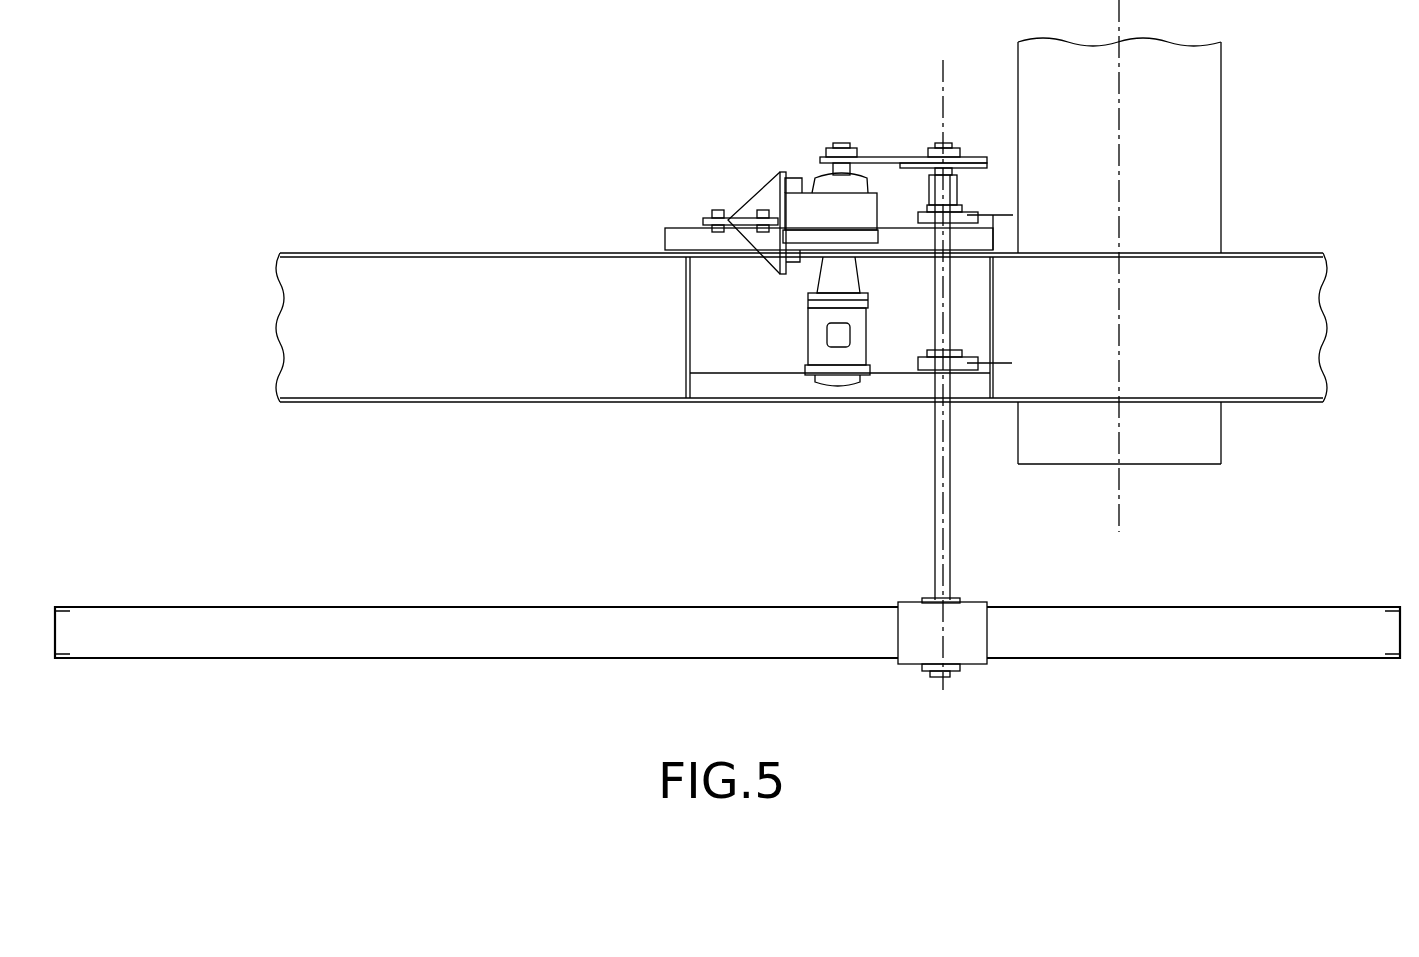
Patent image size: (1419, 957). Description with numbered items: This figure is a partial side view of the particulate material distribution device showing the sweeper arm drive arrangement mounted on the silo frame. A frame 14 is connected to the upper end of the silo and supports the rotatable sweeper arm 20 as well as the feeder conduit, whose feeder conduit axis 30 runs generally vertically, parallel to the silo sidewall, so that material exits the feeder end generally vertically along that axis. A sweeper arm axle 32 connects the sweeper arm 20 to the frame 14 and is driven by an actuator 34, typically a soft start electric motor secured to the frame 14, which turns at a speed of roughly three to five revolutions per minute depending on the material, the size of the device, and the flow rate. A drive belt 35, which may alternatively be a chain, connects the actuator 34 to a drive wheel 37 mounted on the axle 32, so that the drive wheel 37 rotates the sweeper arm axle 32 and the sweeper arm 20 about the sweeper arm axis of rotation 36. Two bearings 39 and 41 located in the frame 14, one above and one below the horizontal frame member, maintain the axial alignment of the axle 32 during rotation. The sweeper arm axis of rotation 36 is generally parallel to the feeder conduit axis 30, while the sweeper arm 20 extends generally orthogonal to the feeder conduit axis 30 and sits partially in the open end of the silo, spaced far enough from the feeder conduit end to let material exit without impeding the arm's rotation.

The frame 14 is at (415, 267).
The sweeper arm 20 is at (680, 610).
The feeder conduit axis 30 is at (1119, 512).
The sweeper arm axle 32 is at (950, 517).
The actuator 34 is at (826, 152).
The drive belt 35 is at (886, 157).
The sweeper arm axis of rotation 36 is at (943, 622).
The drive wheel 37 is at (974, 157).
The bearing 39 is at (967, 215).
The bearing 41 is at (960, 355).